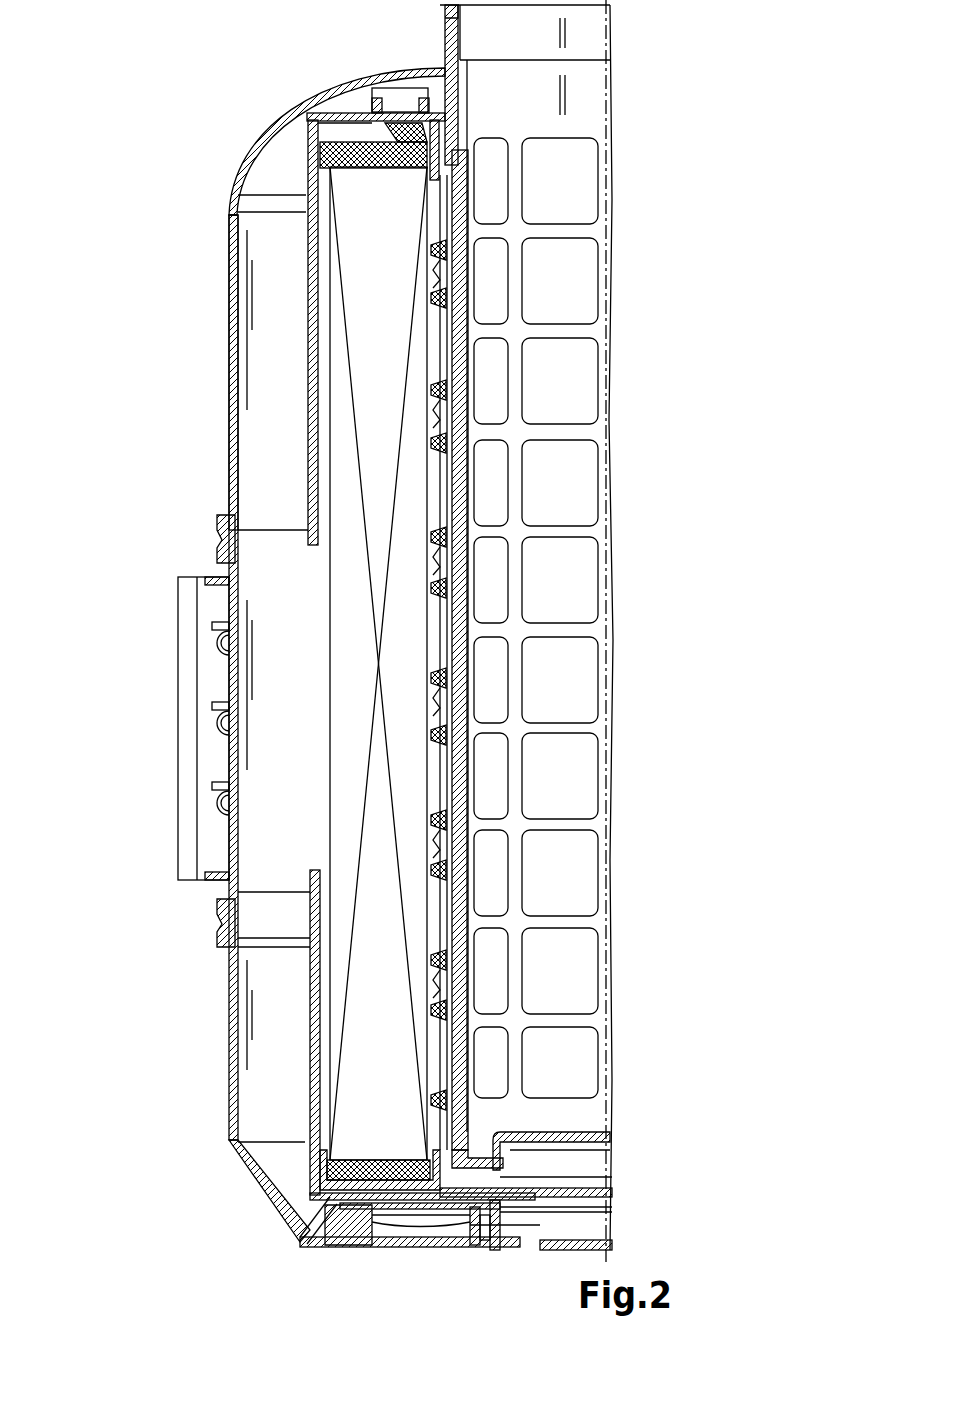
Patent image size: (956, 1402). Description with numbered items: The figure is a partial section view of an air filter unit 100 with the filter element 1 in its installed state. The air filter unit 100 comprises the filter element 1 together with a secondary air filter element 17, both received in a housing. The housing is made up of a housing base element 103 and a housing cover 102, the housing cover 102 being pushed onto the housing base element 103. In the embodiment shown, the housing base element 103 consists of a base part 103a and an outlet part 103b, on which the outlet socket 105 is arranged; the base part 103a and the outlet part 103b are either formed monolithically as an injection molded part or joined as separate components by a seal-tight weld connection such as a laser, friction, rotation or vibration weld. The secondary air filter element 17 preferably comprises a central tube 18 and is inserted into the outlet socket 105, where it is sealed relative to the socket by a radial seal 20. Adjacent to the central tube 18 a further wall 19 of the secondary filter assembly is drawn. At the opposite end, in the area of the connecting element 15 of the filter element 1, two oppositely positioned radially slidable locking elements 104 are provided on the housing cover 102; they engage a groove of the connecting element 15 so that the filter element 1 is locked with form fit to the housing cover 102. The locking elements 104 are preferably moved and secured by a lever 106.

The air filter unit 100 is at (264, 138).
The outlet socket 105 is at (442, 44).
The housing base element 103 is at (218, 437).
The outlet part 103b is at (228, 356).
The base part 103a is at (224, 685).
The housing cover 102 is at (217, 1039).
The filter element 1 is at (275, 557).
The radial seal 20 is at (462, 163).
The central tube 18 is at (470, 567).
The support wall 19 is at (465, 485).
The secondary air filter element 17 is at (555, 674).
The lever 106 is at (386, 1252).
The locking elements 104 is at (447, 1232).
The connecting element 15 is at (497, 1225).